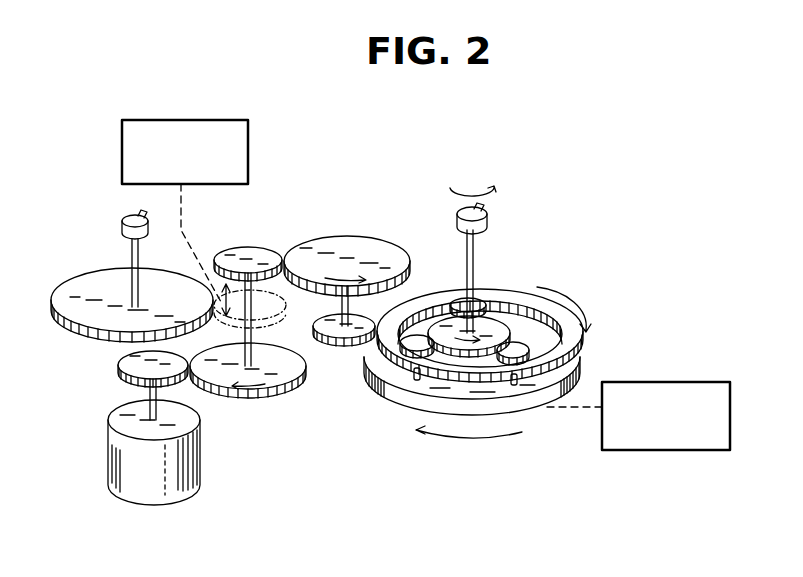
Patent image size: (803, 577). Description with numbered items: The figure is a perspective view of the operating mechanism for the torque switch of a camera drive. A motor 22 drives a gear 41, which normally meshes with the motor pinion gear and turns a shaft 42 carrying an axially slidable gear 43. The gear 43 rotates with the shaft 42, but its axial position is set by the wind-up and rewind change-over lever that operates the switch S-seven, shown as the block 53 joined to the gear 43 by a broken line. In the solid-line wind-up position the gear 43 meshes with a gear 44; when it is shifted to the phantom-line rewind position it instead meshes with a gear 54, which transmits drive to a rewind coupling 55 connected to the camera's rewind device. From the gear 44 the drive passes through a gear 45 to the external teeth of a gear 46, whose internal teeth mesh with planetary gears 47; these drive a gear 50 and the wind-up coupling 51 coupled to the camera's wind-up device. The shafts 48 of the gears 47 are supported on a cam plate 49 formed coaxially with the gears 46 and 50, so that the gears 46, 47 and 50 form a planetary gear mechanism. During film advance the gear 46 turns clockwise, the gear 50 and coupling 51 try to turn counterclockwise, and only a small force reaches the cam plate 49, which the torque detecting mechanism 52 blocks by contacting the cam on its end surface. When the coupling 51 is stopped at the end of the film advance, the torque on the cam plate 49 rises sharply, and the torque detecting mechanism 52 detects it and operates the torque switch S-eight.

The motor 22 is at (140, 490).
The gear 41 is at (287, 380).
The shaft 42 is at (258, 334).
The axially slidable gear 43 is at (233, 248).
The gear 44 is at (345, 236).
The gear 45 is at (336, 333).
The gear 46 is at (441, 289).
The gears 47 is at (483, 297).
The shafts 48 is at (410, 377).
The cam plate 49 is at (420, 397).
The gear 50 is at (493, 328).
The wind-up coupling 51 is at (488, 212).
The torque detecting mechanism 52 is at (667, 380).
The switch S7 53 is at (197, 118).
The gear 54 is at (70, 297).
The rewind coupling 55 is at (122, 227).